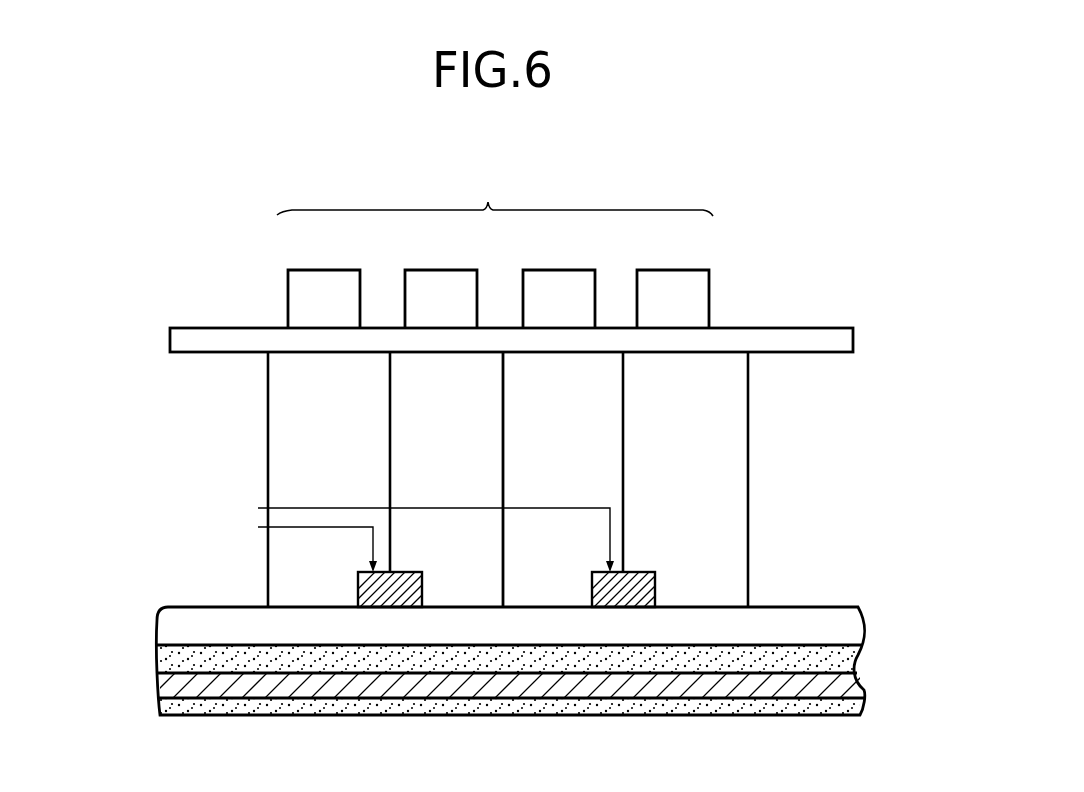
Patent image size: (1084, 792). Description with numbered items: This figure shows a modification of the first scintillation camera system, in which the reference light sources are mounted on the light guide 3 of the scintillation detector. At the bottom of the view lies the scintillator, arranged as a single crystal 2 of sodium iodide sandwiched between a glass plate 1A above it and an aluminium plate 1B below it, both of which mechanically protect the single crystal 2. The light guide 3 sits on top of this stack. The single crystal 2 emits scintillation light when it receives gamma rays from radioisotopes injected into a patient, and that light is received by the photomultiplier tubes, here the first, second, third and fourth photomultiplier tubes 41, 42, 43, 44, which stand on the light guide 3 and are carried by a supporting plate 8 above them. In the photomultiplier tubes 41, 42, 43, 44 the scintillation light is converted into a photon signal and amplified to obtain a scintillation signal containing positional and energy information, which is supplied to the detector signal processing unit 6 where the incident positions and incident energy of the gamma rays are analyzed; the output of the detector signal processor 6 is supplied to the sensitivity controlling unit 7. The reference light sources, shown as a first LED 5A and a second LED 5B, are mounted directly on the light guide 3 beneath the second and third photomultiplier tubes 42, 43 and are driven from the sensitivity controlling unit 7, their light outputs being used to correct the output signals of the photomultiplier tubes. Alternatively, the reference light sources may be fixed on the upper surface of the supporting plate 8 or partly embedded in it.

The glass plate 1A is at (857, 655).
The aluminium plate 1B is at (862, 710).
The single crystal 2 is at (863, 682).
The light guide 3 is at (860, 630).
The first photomultiplier tube 41 is at (285, 410).
The second photomultiplier tube 42 is at (385, 448).
The third photomultiplier tube 43 is at (616, 428).
The fourth photomultiplier tube 44 is at (733, 423).
The first LED 5A is at (403, 572).
The second LED 5B is at (640, 572).
The detector signal processing unit 6 is at (519, 190).
The sensitivity controlling unit 7 is at (346, 511).
The supporting plate 8 is at (856, 340).